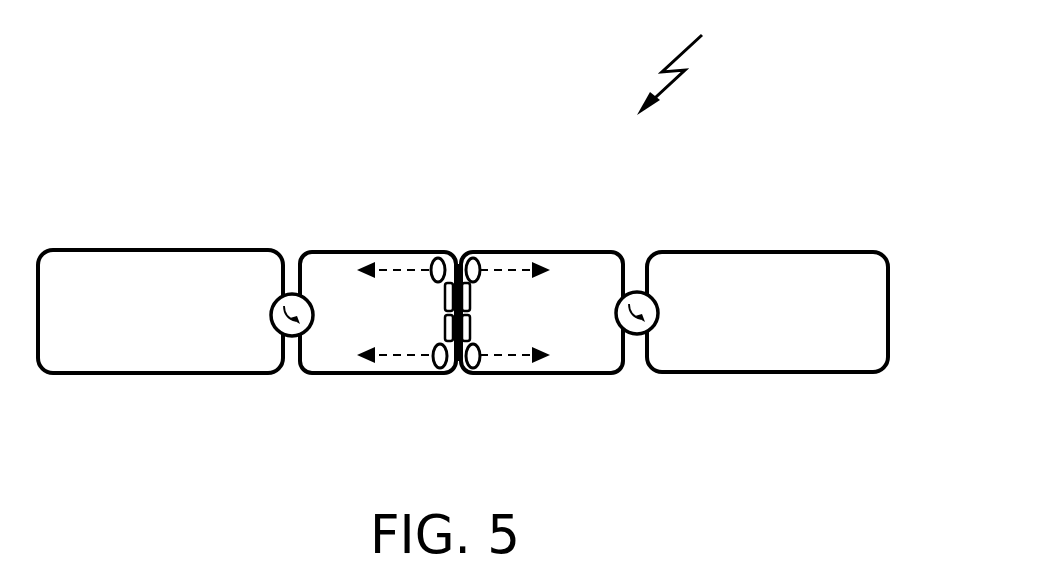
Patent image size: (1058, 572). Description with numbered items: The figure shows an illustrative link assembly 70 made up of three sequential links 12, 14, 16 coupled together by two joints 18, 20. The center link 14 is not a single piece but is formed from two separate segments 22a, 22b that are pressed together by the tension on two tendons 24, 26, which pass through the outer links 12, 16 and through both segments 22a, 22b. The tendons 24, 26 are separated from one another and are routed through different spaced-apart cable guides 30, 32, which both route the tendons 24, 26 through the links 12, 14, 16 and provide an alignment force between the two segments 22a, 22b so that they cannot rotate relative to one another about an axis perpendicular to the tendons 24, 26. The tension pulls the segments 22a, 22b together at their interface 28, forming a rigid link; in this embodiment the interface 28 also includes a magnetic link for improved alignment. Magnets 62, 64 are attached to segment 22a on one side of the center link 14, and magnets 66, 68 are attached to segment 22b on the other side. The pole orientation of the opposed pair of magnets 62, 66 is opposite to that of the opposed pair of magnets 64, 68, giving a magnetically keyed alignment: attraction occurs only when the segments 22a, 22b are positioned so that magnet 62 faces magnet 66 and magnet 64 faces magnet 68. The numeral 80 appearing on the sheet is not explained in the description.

The first panel 12 is at (137, 273).
The second panel 16 is at (753, 273).
The intermediate panel section 14 is at (362, 337).
The first intermediate panel 22a is at (333, 268).
The second intermediate panel 22b is at (578, 272).
The first hinge 20 is at (292, 338).
The second hinge 18 is at (635, 336).
The central joint 28 is at (457, 254).
The second pin 30 is at (478, 262).
The first pin 32 is at (432, 262).
The first slide direction 24 is at (520, 270).
The second slide direction 26 is at (510, 360).
The lower right latch 62 is at (474, 336).
The upper right latch 64 is at (475, 290).
The lower left latch 66 is at (443, 328).
The upper left latch 68 is at (443, 295).
The foldable device 70 is at (683, 60).
The sheet marker 80 is at (812, 555).